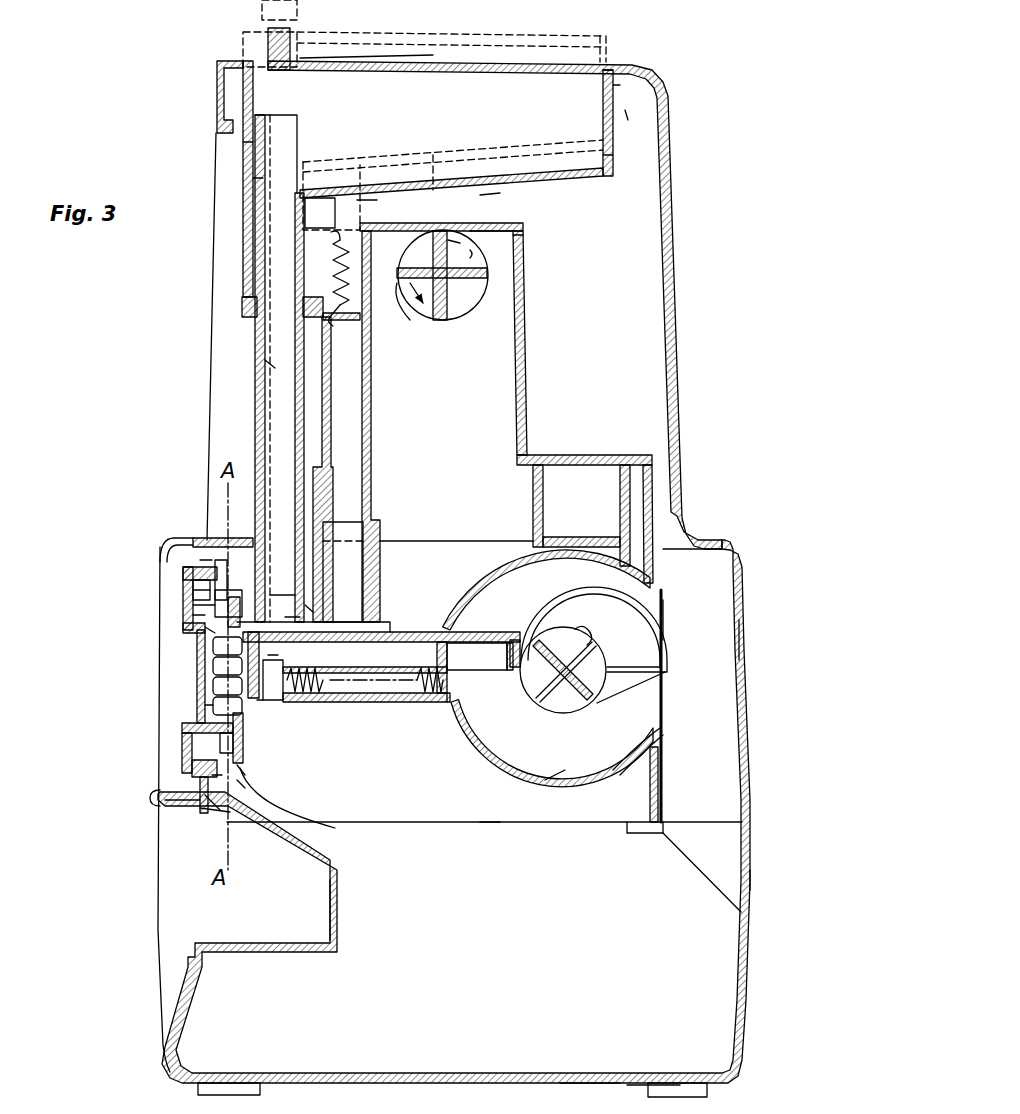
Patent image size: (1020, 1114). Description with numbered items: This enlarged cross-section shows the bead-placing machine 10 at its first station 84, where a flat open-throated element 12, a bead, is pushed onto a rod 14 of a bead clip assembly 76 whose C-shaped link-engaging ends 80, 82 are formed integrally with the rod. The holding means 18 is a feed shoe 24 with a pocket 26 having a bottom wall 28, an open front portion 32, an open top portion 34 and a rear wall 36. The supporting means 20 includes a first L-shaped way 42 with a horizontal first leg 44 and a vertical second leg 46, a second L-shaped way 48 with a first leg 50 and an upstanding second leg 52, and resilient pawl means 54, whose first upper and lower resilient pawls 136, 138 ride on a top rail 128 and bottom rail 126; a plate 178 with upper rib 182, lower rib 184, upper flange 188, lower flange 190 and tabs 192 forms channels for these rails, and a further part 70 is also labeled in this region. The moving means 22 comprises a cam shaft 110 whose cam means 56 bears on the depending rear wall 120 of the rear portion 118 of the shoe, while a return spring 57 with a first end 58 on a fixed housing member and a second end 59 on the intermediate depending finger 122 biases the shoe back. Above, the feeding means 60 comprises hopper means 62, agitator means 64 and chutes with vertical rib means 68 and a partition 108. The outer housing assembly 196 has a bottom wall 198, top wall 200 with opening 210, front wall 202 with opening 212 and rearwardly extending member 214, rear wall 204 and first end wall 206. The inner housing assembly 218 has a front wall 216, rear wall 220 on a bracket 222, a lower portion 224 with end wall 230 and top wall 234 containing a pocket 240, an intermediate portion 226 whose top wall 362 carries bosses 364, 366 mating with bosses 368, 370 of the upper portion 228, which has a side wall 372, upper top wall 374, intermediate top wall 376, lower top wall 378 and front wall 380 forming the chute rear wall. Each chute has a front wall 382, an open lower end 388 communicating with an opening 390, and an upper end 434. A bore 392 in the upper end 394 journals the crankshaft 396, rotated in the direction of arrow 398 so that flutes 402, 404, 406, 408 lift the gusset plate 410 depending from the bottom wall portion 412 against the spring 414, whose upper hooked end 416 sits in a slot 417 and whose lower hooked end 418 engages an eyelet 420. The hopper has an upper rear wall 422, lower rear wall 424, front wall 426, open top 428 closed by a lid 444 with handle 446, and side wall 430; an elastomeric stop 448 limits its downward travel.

The machine 10 is at (765, 880).
The open-throated element 12 is at (195, 717).
The rod 14 is at (150, 733).
The holding means 18 is at (503, 627).
The supporting means 20 is at (235, 573).
The moving means 22 is at (667, 617).
The feed shoe 24 is at (387, 632).
The pocket 26 is at (232, 585).
The bottom wall 28 is at (263, 660).
The open front portion 32 is at (287, 658).
The open top portion 34 is at (297, 590).
The rear wall 36 is at (287, 660).
The first L-shaped way 42 is at (187, 647).
The first leg 44 is at (175, 560).
The second leg 46 is at (187, 677).
The second L-shaped way 48 is at (243, 783).
The first leg 50 is at (240, 780).
The second leg 52 is at (243, 773).
The resilient pawl means 54 is at (231, 562).
The cam means 56 is at (593, 590).
The return spring 57 is at (400, 693).
The first end 58 is at (273, 657).
The second end 59 is at (430, 697).
The feeding means 60 is at (630, 115).
The hopper means 62 is at (608, 158).
The agitator means 64 is at (467, 330).
The vertical rib means 68 is at (288, 134).
The seal 70 is at (197, 693).
The bead clip assembly 76 is at (197, 707).
The link-engaging end 80 is at (183, 603).
The link-engaging end 82 is at (173, 803).
The first station 84 is at (93, 680).
The partition 108 is at (287, 116).
The cam shaft 110 is at (553, 712).
The rear portion 118 is at (500, 665).
The depending rear wall 120 is at (560, 633).
The intermediate depending finger 122 is at (447, 680).
The bottom rail 126 is at (210, 770).
The top rail 128 is at (185, 590).
The first upper resilient pawl 136 is at (183, 617).
The first lower resilient pawl 138 is at (220, 760).
The plate 178 is at (197, 660).
The upper rib 182 is at (190, 623).
The lower rib 184 is at (200, 737).
The upper flange 188 is at (207, 565).
The lower flange 190 is at (207, 797).
The tab 192 is at (213, 555).
The outer housing assembly 196 is at (757, 990).
The bottom wall 198 is at (593, 1084).
The top wall 200 is at (638, 60).
The front wall 202 is at (170, 1058).
The rear wall 204 is at (746, 640).
The first end wall 206 is at (633, 987).
The opening 210 is at (612, 45).
The opening 212 is at (157, 783).
The rearwardly extending member 214 is at (337, 913).
The front wall 216 is at (213, 803).
The inner housing assembly 218 is at (490, 830).
The rear wall 220 is at (660, 793).
The bracket 222 is at (693, 875).
The lower portion 224 is at (600, 812).
The intermediate portion 226 is at (663, 547).
The upper portion 228 is at (657, 487).
The end wall 230 is at (448, 816).
The top wall 234 is at (657, 731).
The pocket 240 is at (557, 767).
The top wall 362 is at (447, 607).
The hollow cylindrical boss 364 is at (380, 478).
The hollow cylindrical boss 366 is at (532, 481).
The complementary boss 368 is at (371, 408).
The complementary boss 370 is at (547, 486).
The encompassing side wall 372 is at (427, 543).
The upper top wall 374 is at (490, 200).
The intermediate top wall 376 is at (333, 370).
The lower top wall 378 is at (585, 453).
The front wall 380 is at (305, 415).
The front wall 382 is at (270, 365).
The open lower end 388 is at (313, 605).
The opening 390 is at (300, 617).
The bore 392 is at (460, 243).
The upper end 394 is at (522, 231).
The crankshaft 396 is at (463, 272).
The arrow 398 is at (467, 291).
The flute 402 is at (397, 283).
The flute 404 is at (482, 240).
The flute 406 is at (473, 254).
The flute 408 is at (520, 325).
The gusset plate 410 is at (505, 165).
The bottom wall portion 412 is at (587, 178).
The spring 414 is at (408, 221).
The upper hooked end 416 is at (403, 174).
The slot 417 is at (367, 200).
The lower hooked end 418 is at (270, 330).
The eyelet 420 is at (337, 325).
The upper rear wall 422 is at (612, 88).
The lower rear wall 424 is at (313, 200).
The front wall 426 is at (245, 142).
The open top 428 is at (607, 78).
The side wall 430 is at (478, 113).
The upper end 434 is at (258, 178).
The lid 444 is at (392, 75).
The handle 446 is at (300, 42).
The elastomeric stop 448 is at (250, 300).